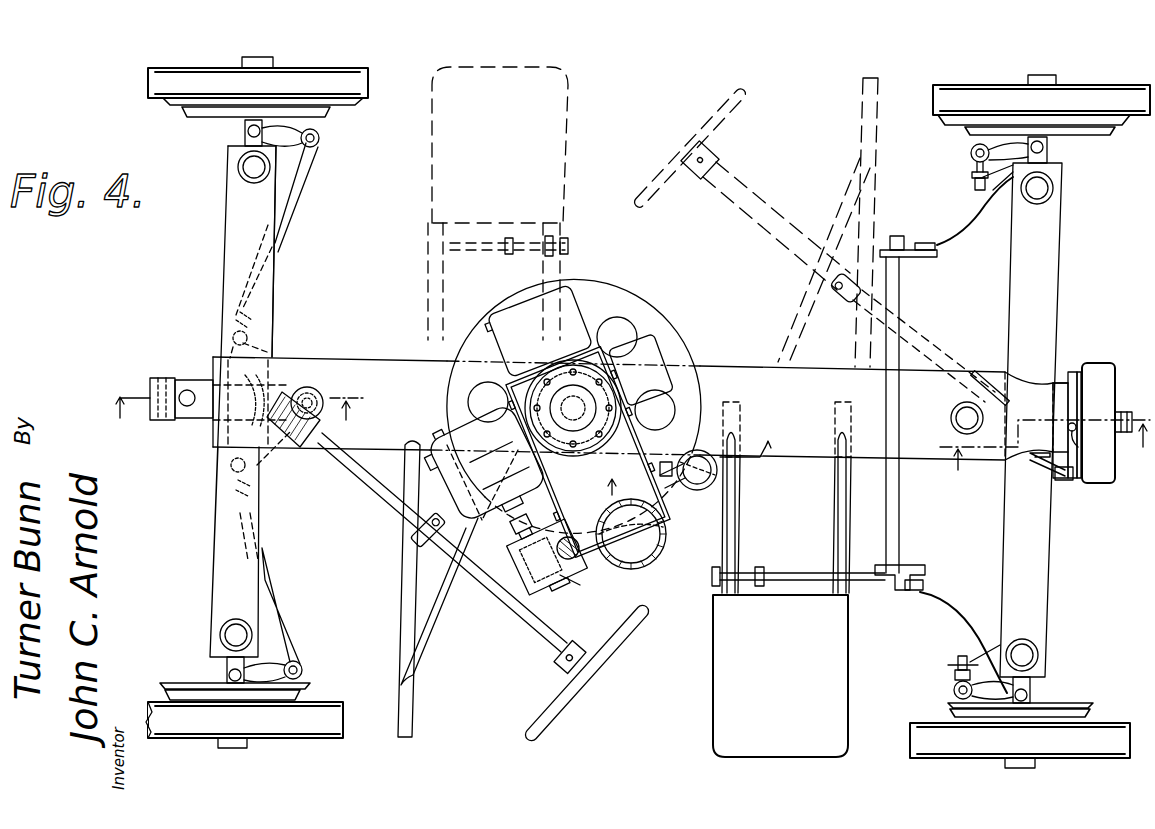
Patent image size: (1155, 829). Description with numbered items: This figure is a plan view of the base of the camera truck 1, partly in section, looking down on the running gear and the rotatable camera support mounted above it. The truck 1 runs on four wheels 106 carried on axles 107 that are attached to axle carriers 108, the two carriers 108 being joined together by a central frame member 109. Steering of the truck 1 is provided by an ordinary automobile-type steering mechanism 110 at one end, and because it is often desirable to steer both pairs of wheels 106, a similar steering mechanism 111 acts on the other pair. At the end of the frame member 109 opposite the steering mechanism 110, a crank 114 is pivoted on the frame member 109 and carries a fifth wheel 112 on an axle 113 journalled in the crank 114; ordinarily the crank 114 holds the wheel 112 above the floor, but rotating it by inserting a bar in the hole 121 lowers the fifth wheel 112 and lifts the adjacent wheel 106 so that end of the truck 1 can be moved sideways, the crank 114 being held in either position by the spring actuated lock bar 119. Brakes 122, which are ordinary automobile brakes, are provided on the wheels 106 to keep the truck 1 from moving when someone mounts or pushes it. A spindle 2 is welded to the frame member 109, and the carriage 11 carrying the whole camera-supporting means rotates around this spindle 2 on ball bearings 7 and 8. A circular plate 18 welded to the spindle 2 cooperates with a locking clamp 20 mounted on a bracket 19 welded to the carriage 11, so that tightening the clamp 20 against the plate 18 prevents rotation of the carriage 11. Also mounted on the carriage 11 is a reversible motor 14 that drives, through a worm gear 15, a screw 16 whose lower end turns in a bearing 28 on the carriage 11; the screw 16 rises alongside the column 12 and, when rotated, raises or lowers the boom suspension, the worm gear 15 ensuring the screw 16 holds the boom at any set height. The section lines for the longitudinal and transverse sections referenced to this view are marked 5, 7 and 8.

The truck 1 is at (382, 75).
The spindle 2 is at (568, 352).
The section line 5 is at (1045, 459).
The ball bearing 7 is at (231, 409).
The ball bearing 8 is at (688, 462).
The carriage 11 is at (530, 366).
The column 12 is at (647, 562).
The reversible motor 14 is at (447, 478).
The worm gear 15 is at (532, 573).
The screw 16 is at (574, 558).
The circular plate 18 is at (614, 300).
The bracket 19 is at (664, 464).
The locking clamp 20 is at (702, 490).
The bearing 28 is at (572, 585).
The wheel 106 is at (177, 80).
The axle 107 is at (228, 660).
The axle carrier 108 is at (228, 230).
The frame member 109 is at (770, 378).
The steering mechanism 110 is at (313, 388).
The steering mechanism 111 is at (988, 375).
The fifth wheel 112 is at (1098, 362).
The axle 113 is at (1081, 416).
The crank 114 is at (1070, 372).
The spring actuated lock bar 119 is at (1068, 480).
The hole 121 is at (1076, 436).
The brake 122 is at (958, 122).